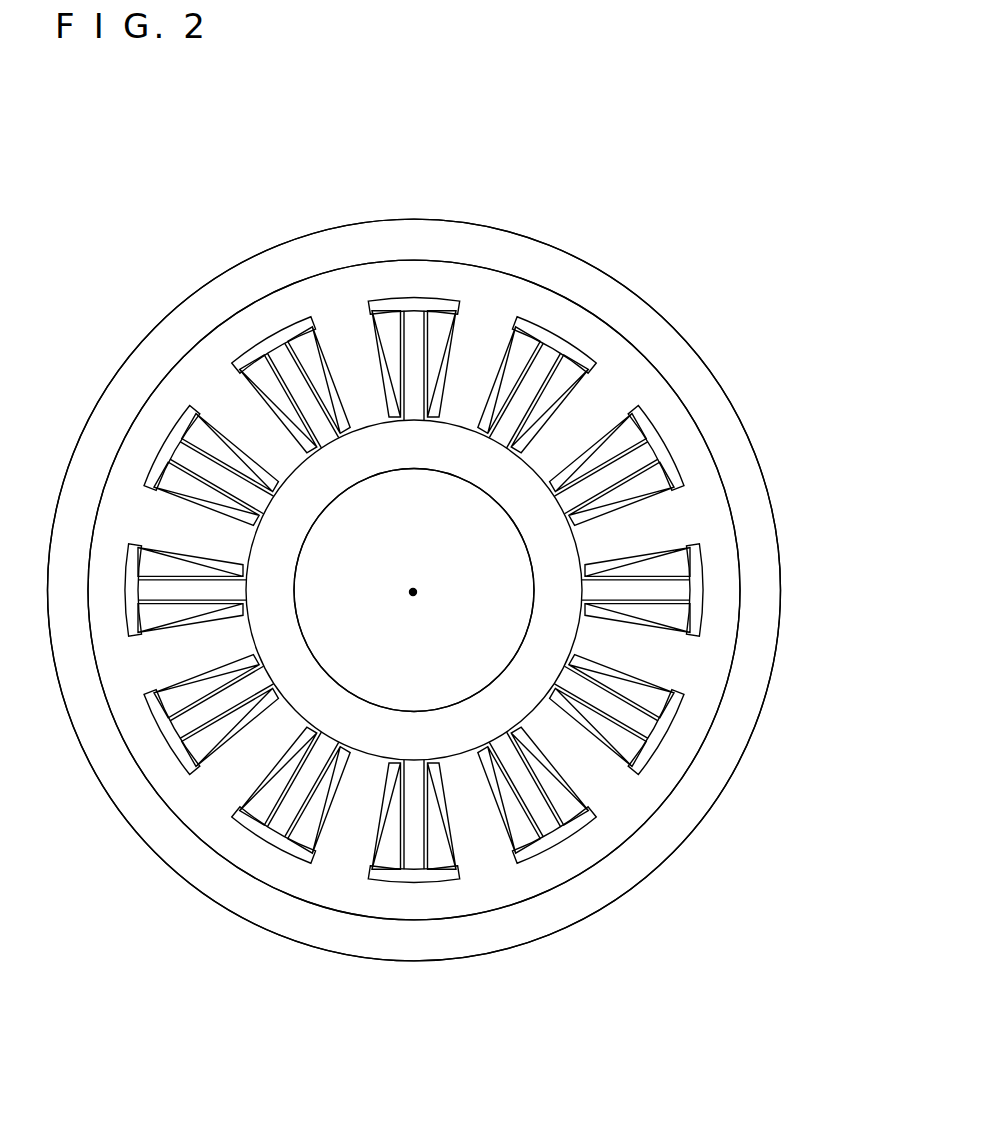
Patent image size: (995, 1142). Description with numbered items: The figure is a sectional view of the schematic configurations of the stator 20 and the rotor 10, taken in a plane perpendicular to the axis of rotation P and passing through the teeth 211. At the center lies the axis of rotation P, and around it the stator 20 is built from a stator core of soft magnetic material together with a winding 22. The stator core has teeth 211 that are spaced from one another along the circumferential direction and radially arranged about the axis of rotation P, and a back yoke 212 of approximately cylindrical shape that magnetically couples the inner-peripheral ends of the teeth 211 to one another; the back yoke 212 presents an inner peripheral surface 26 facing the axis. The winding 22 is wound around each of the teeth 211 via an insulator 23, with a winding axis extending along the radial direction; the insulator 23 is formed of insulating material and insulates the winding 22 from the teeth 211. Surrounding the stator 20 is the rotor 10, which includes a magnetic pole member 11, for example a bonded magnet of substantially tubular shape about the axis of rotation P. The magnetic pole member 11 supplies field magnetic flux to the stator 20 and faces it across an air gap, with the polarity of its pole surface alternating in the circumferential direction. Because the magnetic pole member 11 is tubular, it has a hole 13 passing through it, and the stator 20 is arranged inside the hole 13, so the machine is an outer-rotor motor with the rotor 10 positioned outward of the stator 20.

The rotor 10 is at (535, 226).
The magnetic pole member 11 is at (270, 262).
The hole 13 is at (198, 343).
The stator 20 is at (589, 341).
The teeth 211 is at (415, 303).
The back yoke 212 is at (422, 466).
The winding 22 is at (442, 300).
The insulator 23 is at (383, 308).
The inner peripheral surface 26 is at (315, 524).
The axis of rotation P is at (401, 591).